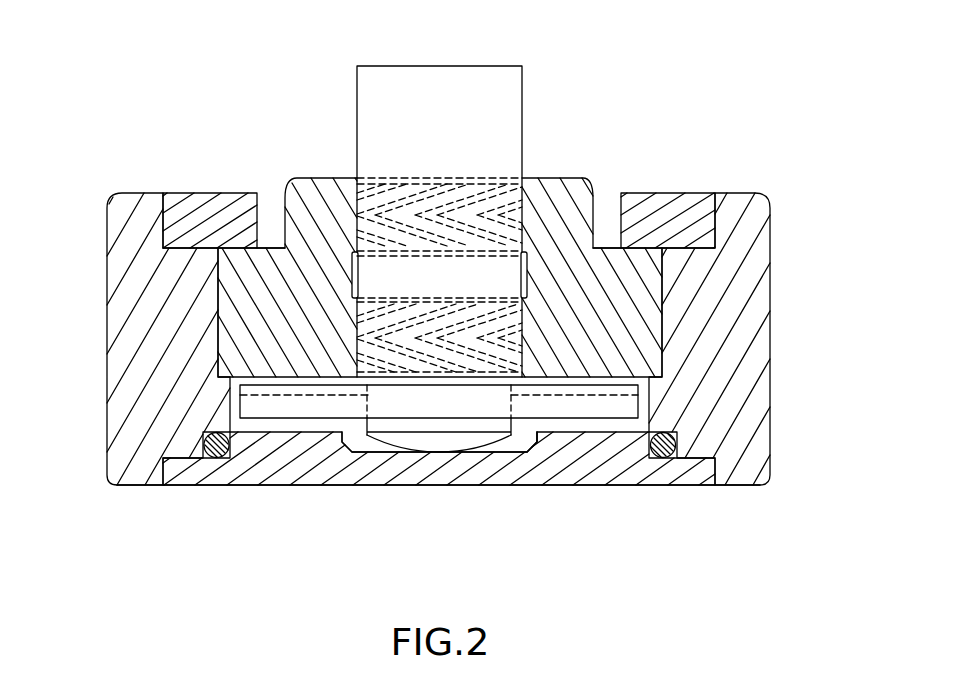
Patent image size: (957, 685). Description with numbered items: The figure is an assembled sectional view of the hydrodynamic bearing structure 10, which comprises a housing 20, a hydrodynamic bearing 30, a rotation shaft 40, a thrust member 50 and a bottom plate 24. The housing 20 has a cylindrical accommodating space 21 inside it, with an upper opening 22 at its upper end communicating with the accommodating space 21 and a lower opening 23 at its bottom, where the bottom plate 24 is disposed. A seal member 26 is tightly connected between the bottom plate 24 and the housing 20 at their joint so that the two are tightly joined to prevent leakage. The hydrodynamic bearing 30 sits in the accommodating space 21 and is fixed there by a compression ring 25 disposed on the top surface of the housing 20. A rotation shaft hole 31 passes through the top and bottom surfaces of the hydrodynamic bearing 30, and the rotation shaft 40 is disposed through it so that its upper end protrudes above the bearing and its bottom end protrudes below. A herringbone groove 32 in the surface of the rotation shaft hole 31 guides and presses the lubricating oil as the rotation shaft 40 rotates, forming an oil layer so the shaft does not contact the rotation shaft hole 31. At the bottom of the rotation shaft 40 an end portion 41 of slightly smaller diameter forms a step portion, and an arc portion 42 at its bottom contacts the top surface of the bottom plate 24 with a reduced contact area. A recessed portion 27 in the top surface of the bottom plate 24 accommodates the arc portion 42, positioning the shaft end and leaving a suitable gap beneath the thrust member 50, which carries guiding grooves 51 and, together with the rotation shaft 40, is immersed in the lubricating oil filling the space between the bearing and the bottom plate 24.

The hydrodynamic bearing structure 10 is at (430, 500).
The housing 20 is at (760, 299).
The accommodating space 21 is at (645, 400).
The upper opening 22 is at (607, 200).
The lower opening 23 is at (621, 466).
The bottom plate 24 is at (465, 463).
The compression ring 25 is at (672, 193).
The seal member 26 is at (666, 460).
The recessed portion 27 is at (512, 456).
The hydrodynamic bearing 30 is at (543, 178).
The rotation shaft hole 31 is at (355, 198).
The herringbone groove 32 is at (405, 200).
The rotation shaft 40 is at (442, 92).
The end portion 41 is at (350, 434).
The arc portion 42 is at (385, 424).
The thrust member 50 is at (572, 406).
The guiding grooves 51 is at (293, 397).